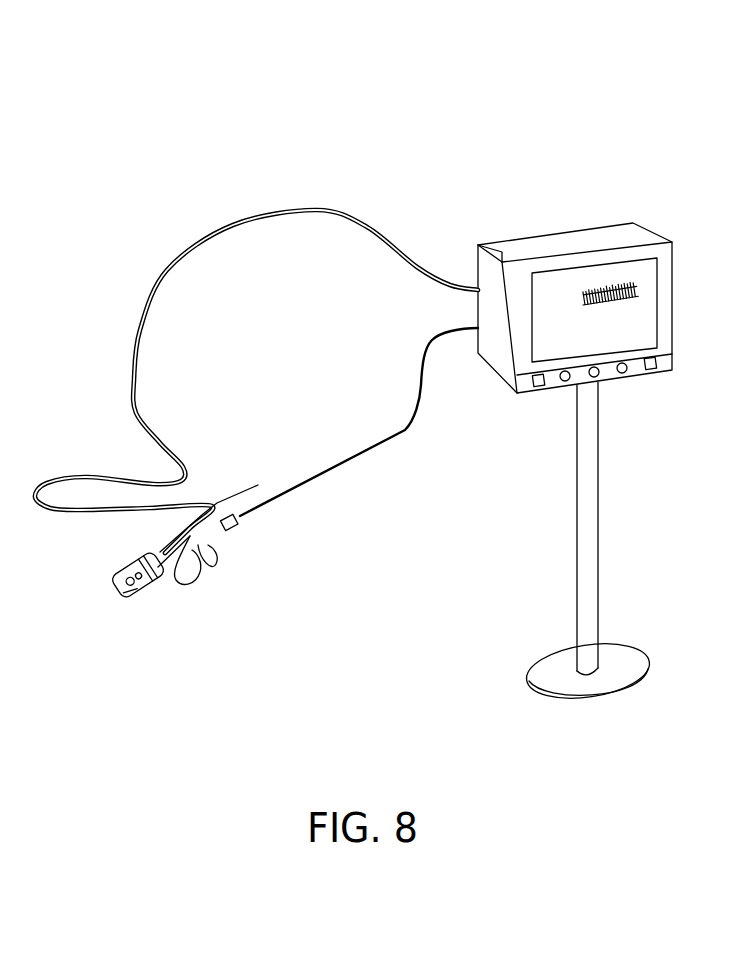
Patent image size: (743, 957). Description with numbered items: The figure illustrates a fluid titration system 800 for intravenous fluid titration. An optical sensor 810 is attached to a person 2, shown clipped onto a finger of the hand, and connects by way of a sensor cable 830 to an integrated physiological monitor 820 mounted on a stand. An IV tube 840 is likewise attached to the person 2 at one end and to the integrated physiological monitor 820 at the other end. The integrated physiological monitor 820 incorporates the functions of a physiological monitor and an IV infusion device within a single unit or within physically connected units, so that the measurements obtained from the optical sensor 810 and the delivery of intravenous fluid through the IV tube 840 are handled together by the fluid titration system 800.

The fluid titration system 800 is at (369, 62).
The integrated physiological monitor 820 is at (642, 227).
The sensor cable 830 is at (340, 210).
The IV tube 840 is at (410, 435).
The person 2 is at (228, 542).
The optical sensor 810 is at (117, 591).